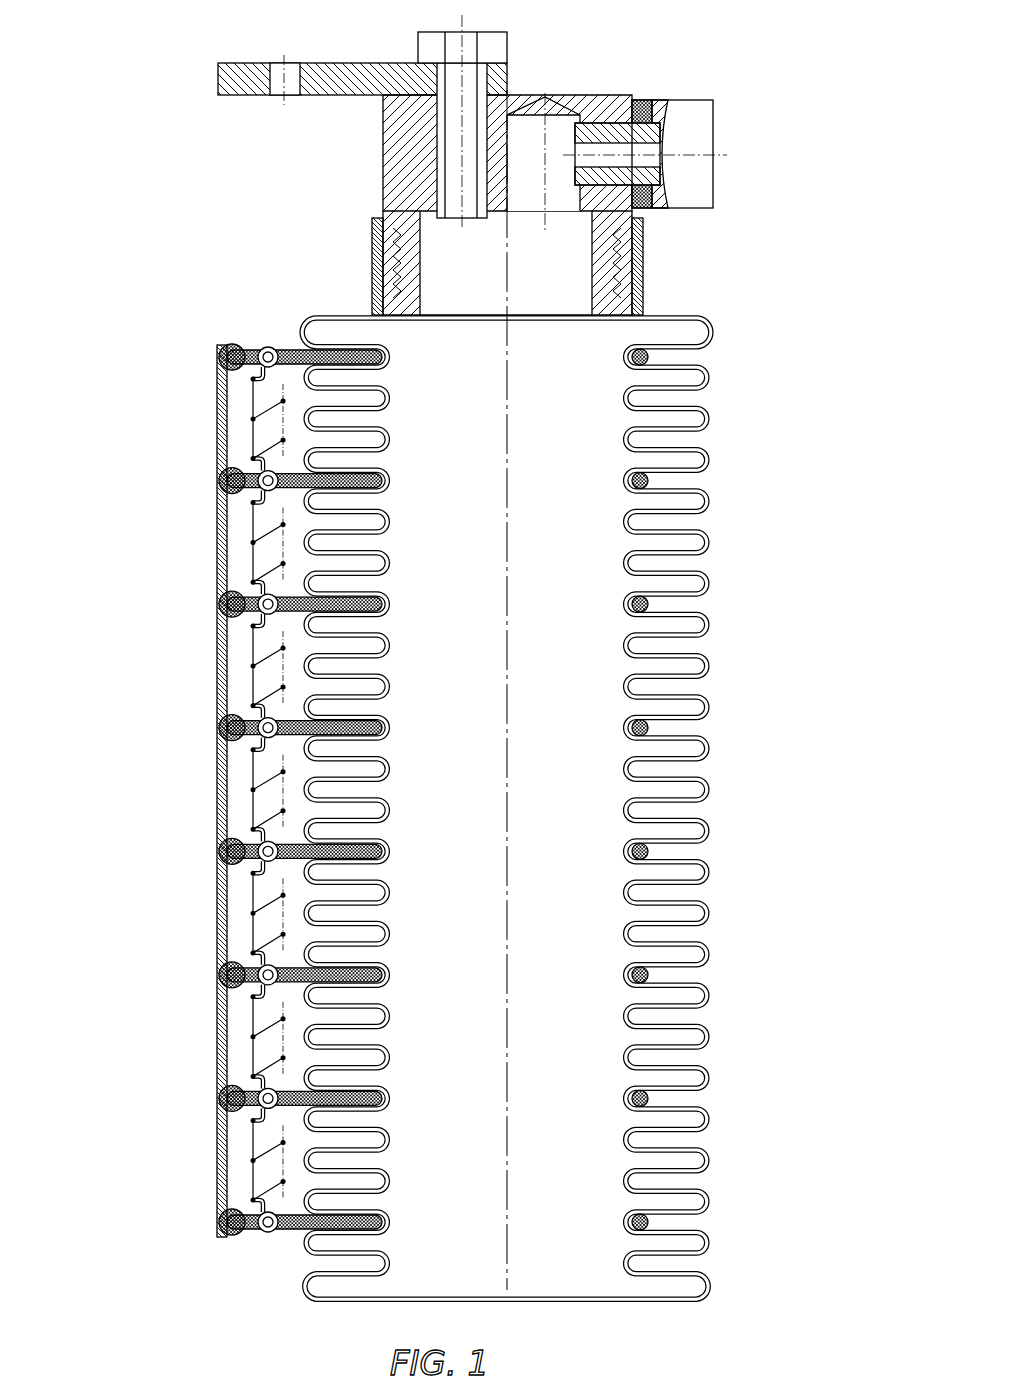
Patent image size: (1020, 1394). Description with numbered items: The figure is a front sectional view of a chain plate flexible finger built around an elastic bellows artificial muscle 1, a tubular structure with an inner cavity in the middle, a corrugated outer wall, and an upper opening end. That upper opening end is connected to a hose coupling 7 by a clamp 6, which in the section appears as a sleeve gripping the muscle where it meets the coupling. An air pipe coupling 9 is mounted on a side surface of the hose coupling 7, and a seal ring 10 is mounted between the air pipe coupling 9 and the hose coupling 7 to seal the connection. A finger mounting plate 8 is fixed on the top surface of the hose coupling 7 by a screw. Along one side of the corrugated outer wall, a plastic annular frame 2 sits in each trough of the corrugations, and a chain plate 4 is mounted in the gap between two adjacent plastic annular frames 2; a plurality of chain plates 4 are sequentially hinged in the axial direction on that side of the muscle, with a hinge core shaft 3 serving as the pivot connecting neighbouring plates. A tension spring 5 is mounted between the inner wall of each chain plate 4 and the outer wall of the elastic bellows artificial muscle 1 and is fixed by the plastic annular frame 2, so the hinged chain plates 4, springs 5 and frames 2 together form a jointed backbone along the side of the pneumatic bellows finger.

The elastic bellows artificial muscle 1 is at (300, 1128).
The plastic annular frame 2 is at (303, 982).
The hinge core shaft 3 is at (218, 973).
The chain plate 4 is at (218, 912).
The tension spring 5 is at (260, 830).
The clamp 6 is at (370, 287).
The hose coupling 7 is at (410, 180).
The finger mounting plate 8 is at (310, 82).
The air pipe coupling 9 is at (660, 153).
The seal ring 10 is at (647, 205).